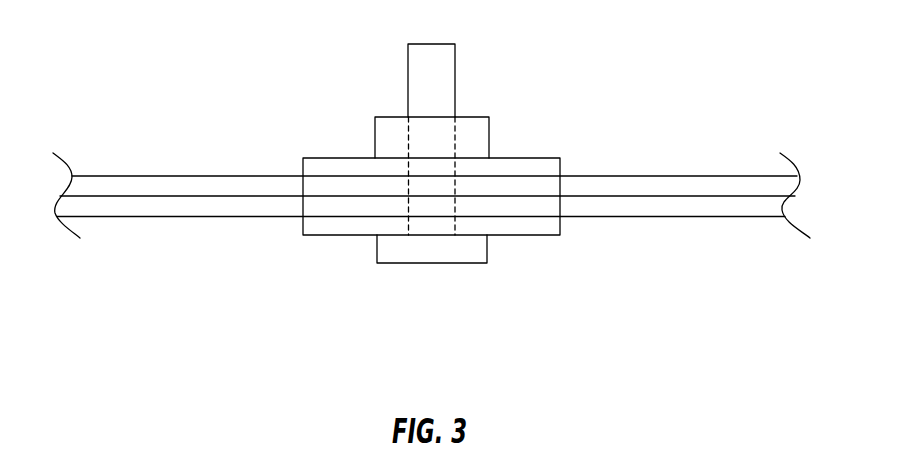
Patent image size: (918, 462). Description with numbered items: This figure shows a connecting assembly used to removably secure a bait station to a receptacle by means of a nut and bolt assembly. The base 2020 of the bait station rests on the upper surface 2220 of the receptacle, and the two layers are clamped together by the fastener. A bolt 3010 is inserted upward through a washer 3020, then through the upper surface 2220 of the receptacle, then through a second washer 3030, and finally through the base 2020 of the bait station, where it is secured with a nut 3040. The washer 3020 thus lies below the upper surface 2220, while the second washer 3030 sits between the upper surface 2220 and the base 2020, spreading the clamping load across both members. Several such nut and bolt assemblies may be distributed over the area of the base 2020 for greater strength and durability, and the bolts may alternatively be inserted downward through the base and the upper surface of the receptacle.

The base 2020 is at (102, 180).
The upper surface 2220 is at (765, 210).
The bolt 3010 is at (458, 50).
The nut 3040 is at (365, 137).
The second washer 3030 is at (525, 155).
The washer 3020 is at (530, 235).